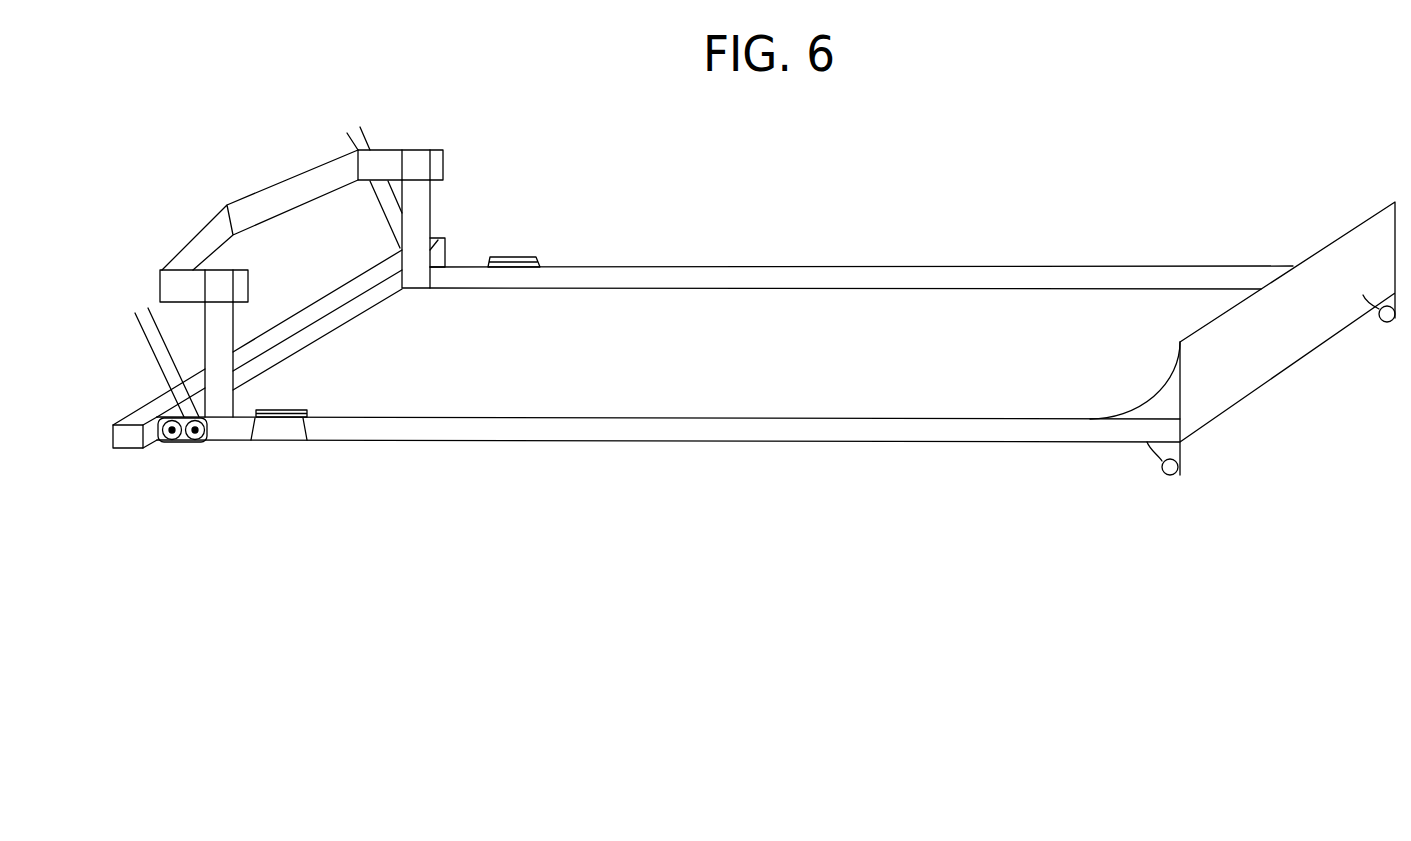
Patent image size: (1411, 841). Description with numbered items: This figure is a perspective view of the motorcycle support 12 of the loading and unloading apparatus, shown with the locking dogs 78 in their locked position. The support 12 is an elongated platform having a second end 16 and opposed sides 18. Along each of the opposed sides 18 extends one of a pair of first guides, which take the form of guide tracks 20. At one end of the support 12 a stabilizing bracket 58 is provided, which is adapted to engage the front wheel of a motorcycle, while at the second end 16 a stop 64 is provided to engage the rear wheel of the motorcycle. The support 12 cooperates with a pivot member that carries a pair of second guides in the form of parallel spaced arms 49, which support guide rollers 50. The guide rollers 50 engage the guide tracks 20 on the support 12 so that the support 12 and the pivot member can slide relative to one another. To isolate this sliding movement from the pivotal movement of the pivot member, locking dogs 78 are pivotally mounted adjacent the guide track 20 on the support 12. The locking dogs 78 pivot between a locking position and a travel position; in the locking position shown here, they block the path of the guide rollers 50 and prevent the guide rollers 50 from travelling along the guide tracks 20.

The motorcycle support 12 is at (343, 290).
The second end 16 is at (1285, 370).
The opposed sides 18 is at (938, 266).
The guide tracks 20 is at (812, 266).
The parallel spaced arms 49 is at (366, 140).
The guide rollers 50 is at (168, 444).
The stabilizing bracket 58 is at (203, 226).
The stop 64 is at (1143, 402).
The locking dogs 78 is at (520, 255).